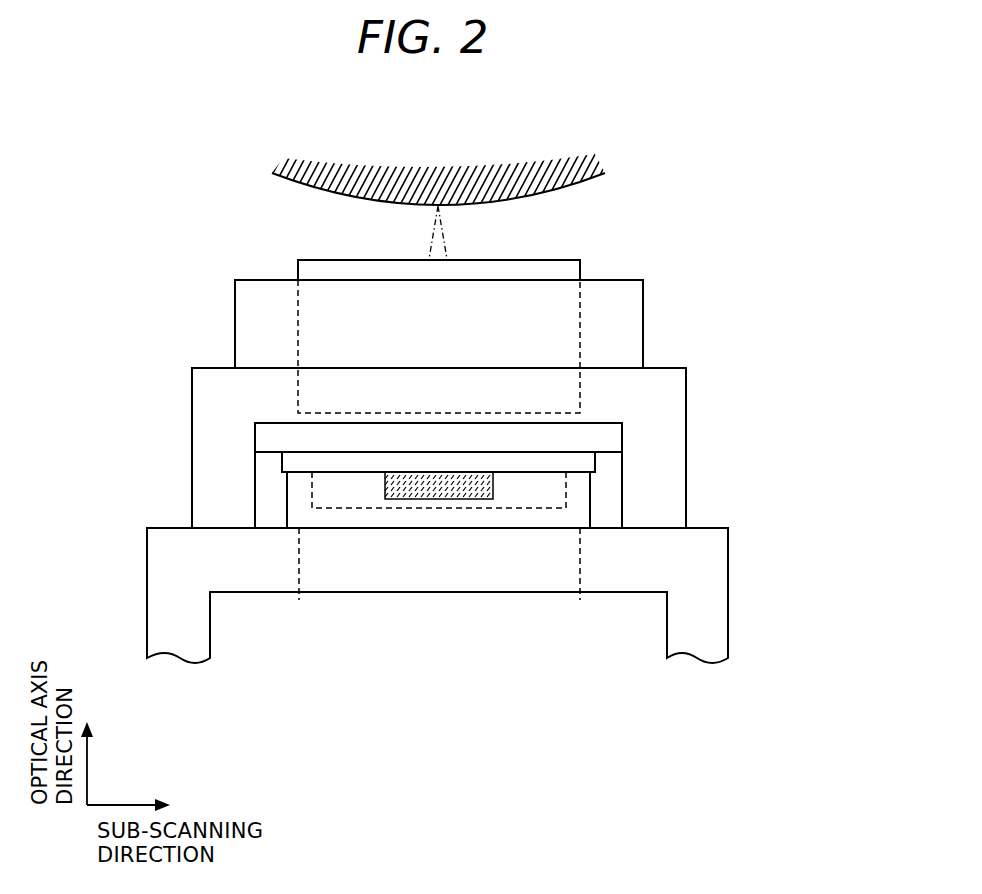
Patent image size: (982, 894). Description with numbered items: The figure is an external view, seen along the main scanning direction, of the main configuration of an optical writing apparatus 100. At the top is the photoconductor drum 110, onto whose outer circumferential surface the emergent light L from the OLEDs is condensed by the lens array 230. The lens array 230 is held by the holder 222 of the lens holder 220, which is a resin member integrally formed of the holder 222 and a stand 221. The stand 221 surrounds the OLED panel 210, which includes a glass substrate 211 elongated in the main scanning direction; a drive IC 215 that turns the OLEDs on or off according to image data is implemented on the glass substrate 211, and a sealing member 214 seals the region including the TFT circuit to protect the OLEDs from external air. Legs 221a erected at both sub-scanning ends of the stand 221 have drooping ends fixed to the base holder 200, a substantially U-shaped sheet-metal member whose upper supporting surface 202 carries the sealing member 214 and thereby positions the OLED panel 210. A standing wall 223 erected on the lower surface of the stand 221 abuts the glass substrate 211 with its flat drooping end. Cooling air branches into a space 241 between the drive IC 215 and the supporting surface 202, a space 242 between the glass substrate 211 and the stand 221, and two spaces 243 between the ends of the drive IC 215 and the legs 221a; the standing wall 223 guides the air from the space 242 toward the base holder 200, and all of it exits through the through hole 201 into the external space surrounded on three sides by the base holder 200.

The optical writing apparatus 100 is at (93, 262).
The photoconductor drum 110 is at (582, 180).
The emergent light L is at (449, 243).
The base holder 200 is at (737, 528).
The through hole 201 is at (578, 600).
The supporting surface 202 is at (725, 528).
The OLED panel 210 is at (628, 452).
The glass substrate 211 is at (538, 462).
The sealing member 214 is at (287, 497).
The drive IC 215 is at (440, 500).
The lens holder 220 is at (763, 308).
The stand 221 is at (687, 380).
The legs 221a is at (673, 428).
The holder 222 is at (643, 326).
The standing wall 223 is at (276, 425).
The lens array 230 is at (298, 259).
The space 241 is at (378, 500).
The space 242 is at (255, 423).
The spaces 243 is at (378, 533).